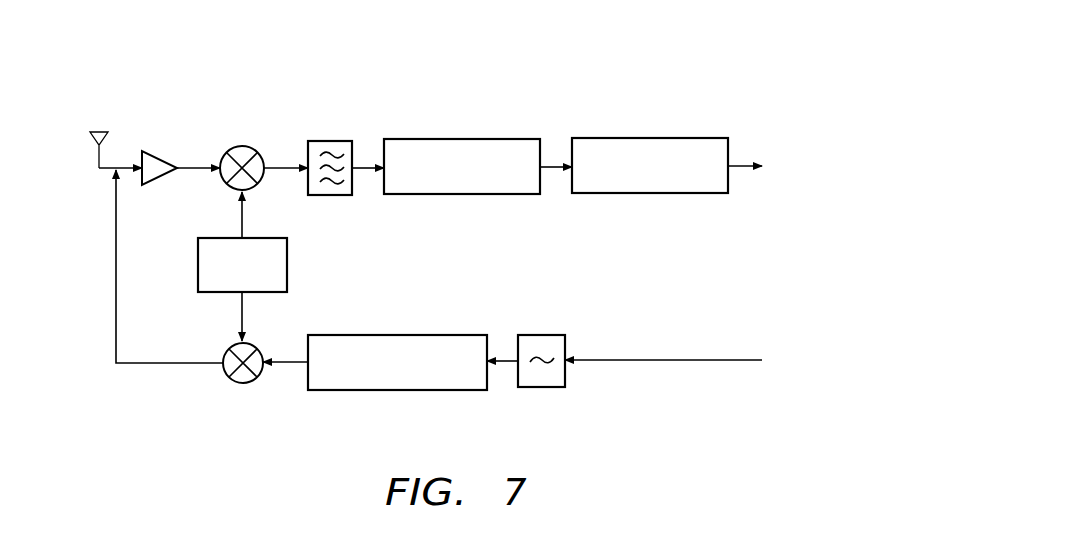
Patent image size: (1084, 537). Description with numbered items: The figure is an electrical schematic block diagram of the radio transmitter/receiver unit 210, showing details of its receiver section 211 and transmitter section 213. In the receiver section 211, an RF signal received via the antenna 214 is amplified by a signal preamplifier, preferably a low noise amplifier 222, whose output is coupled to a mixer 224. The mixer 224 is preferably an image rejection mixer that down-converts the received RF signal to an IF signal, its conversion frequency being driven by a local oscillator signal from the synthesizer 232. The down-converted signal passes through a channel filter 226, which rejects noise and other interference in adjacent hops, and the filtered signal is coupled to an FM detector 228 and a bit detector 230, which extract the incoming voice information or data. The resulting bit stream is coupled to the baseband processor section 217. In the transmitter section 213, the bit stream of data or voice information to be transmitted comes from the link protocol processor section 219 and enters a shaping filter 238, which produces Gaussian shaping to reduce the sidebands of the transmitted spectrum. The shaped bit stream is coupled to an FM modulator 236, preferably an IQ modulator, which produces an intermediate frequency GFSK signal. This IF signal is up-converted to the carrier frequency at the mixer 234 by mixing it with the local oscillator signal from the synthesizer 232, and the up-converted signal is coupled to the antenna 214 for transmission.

The radio transmitter/receiver unit 210 is at (478, 58).
The receiver section 211 is at (517, 128).
The transmitter section 213 is at (453, 400).
The antenna 214 is at (97, 156).
The baseband processor section 217 is at (843, 161).
The link protocol processor section 219 is at (847, 355).
The low noise amplifier 222 is at (162, 186).
The image rejection mixer 224 is at (262, 185).
The channel filter 226 is at (328, 197).
The FM detector 228 is at (460, 139).
The bit detector 230 is at (650, 137).
The synthesizer 232 is at (198, 268).
The mixer 234 is at (225, 352).
The FM modulator 236 is at (370, 392).
The shaping filter 238 is at (541, 388).